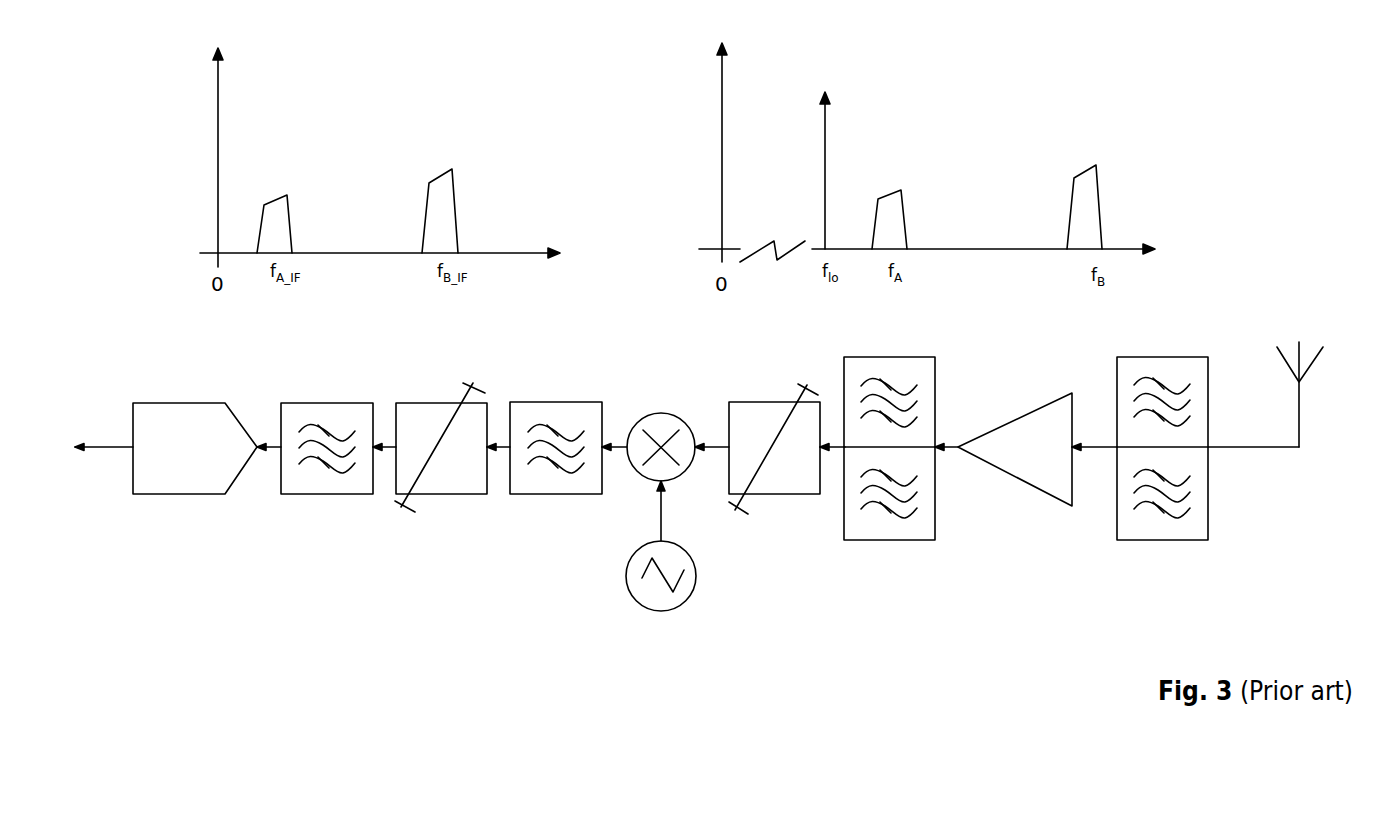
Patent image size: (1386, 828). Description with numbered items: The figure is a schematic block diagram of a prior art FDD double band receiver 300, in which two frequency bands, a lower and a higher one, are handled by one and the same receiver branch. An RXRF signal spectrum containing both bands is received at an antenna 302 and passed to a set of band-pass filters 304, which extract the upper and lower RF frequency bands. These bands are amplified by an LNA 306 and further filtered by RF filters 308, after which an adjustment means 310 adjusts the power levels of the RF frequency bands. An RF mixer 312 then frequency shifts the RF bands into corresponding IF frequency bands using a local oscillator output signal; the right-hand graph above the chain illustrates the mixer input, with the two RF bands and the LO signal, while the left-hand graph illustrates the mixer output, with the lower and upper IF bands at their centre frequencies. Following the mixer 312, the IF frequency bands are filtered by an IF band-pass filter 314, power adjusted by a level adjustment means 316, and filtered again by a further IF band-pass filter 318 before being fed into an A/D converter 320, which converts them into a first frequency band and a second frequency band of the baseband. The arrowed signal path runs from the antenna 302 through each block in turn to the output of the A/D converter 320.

The double band receiver 300 is at (1236, 284).
The antenna 302 is at (1300, 380).
The band-pass filters 304 is at (1198, 472).
The LNA 306 is at (1038, 482).
The RF filters 308 is at (917, 528).
The adjustment means 310 is at (775, 485).
The RF mixer 312 is at (661, 512).
The IF band-pass filter 314 is at (527, 485).
The level adjustment means 316 is at (442, 478).
The IF band-pass filter 318 is at (299, 477).
The A/D converter 320 is at (157, 467).